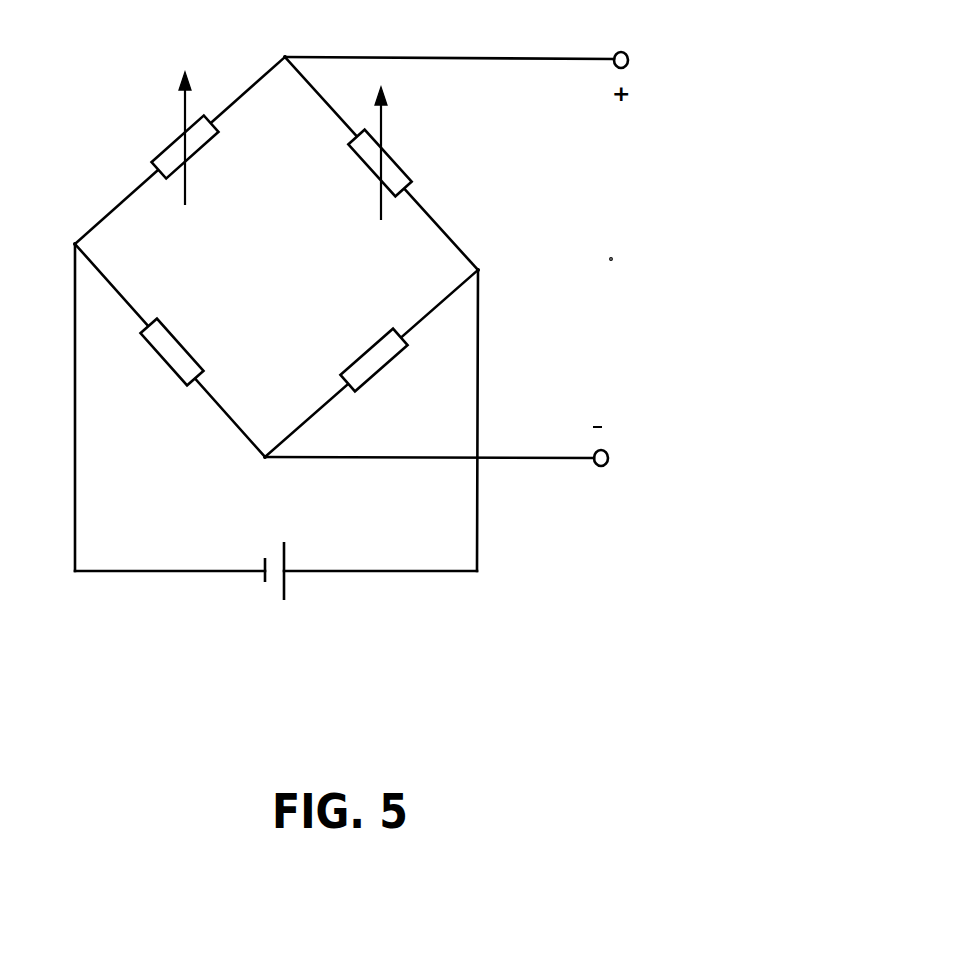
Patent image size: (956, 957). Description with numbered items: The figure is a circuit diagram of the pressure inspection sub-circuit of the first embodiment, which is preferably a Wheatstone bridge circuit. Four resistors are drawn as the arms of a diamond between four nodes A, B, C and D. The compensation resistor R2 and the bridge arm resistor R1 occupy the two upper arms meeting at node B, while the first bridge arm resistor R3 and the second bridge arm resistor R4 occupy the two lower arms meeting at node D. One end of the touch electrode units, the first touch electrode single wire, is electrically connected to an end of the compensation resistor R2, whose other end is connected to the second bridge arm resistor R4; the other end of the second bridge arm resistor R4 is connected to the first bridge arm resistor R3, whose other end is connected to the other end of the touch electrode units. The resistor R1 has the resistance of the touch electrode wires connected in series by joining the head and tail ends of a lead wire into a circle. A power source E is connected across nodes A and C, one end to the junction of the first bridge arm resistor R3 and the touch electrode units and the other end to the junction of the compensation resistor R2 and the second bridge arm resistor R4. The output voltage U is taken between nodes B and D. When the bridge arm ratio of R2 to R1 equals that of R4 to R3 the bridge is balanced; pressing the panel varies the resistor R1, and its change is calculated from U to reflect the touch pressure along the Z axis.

The third bridge arm resistor R1 is at (168, 138).
The compensation resistor R2 is at (390, 153).
The first bridge arm resistor R3 is at (163, 357).
The second bridge arm resistor R4 is at (383, 365).
The voltage source (battery) E is at (291, 582).
The bridge node A is at (55, 258).
The bridge node B is at (278, 33).
The bridge node C is at (495, 271).
The bridge node D is at (270, 484).
The output voltage U is at (614, 282).